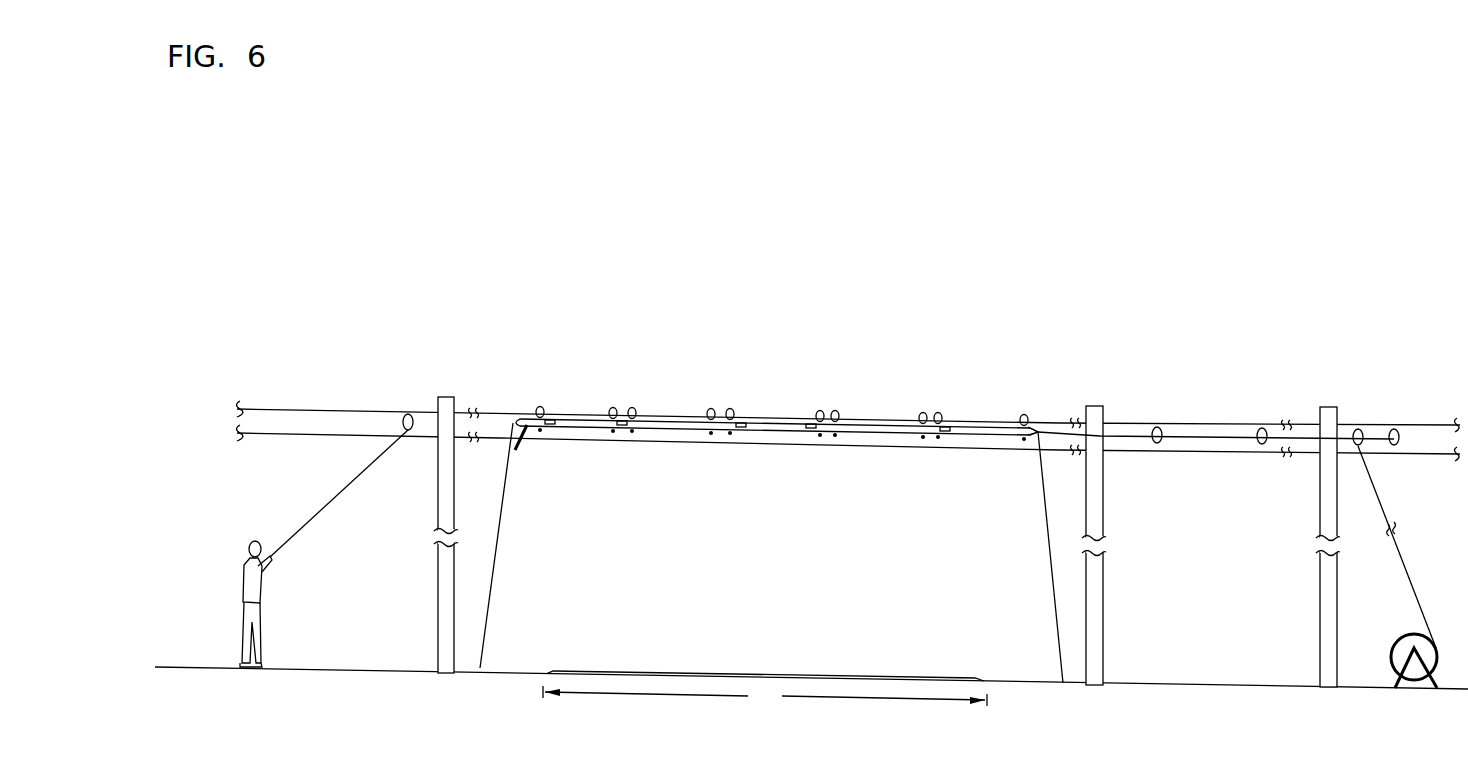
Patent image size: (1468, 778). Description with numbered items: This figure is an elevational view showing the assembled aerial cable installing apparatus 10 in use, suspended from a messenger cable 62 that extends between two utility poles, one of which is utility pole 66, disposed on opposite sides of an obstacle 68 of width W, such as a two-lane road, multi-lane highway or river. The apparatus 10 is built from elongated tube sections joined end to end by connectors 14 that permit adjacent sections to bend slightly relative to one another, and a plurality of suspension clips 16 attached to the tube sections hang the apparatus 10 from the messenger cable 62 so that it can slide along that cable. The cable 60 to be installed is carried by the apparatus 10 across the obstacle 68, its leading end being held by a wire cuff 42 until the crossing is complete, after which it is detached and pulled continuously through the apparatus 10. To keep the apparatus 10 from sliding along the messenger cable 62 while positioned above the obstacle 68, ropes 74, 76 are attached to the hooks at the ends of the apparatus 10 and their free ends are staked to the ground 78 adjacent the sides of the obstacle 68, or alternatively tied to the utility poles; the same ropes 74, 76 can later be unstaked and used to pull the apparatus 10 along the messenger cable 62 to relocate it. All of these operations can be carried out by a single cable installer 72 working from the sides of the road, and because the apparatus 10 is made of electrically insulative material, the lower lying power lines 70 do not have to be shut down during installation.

The aerial cable installing apparatus 10 is at (760, 413).
The connector 14 is at (1103, 467).
The suspension clip 16 is at (631, 408).
The wire cuff 42 is at (515, 450).
The cable 60 is at (1370, 462).
The messenger cable 62 is at (1038, 422).
The utility pole 66 is at (438, 496).
The obstacle 68 is at (807, 675).
The power line 70 is at (828, 448).
The cable installer 72 is at (262, 591).
The rope 74 is at (498, 550).
The rope 76 is at (1048, 557).
The ground 78 is at (483, 660).